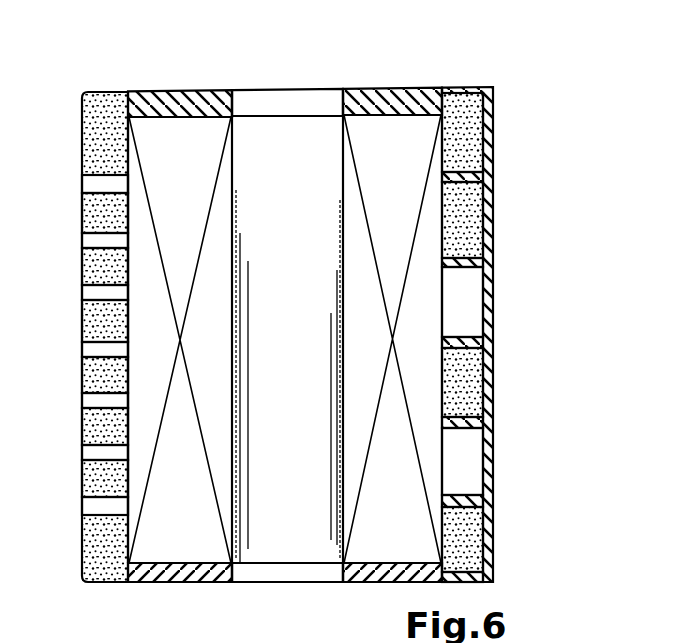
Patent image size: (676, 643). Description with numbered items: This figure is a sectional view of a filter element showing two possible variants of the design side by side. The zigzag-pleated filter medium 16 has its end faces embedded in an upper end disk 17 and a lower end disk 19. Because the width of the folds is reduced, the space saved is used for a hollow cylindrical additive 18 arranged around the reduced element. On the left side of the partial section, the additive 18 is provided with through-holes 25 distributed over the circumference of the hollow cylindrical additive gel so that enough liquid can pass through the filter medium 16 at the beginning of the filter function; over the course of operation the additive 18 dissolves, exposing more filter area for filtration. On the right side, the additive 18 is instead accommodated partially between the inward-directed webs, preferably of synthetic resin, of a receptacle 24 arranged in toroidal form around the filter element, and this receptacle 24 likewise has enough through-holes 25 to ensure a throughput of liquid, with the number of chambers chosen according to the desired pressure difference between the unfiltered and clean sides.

The filter medium 16 is at (345, 158).
The upper end disk 17 is at (411, 90).
The additive 18 is at (109, 100).
The lower end disk 19 is at (182, 580).
The receptacle 24 is at (497, 348).
The through-holes 25 is at (97, 183).